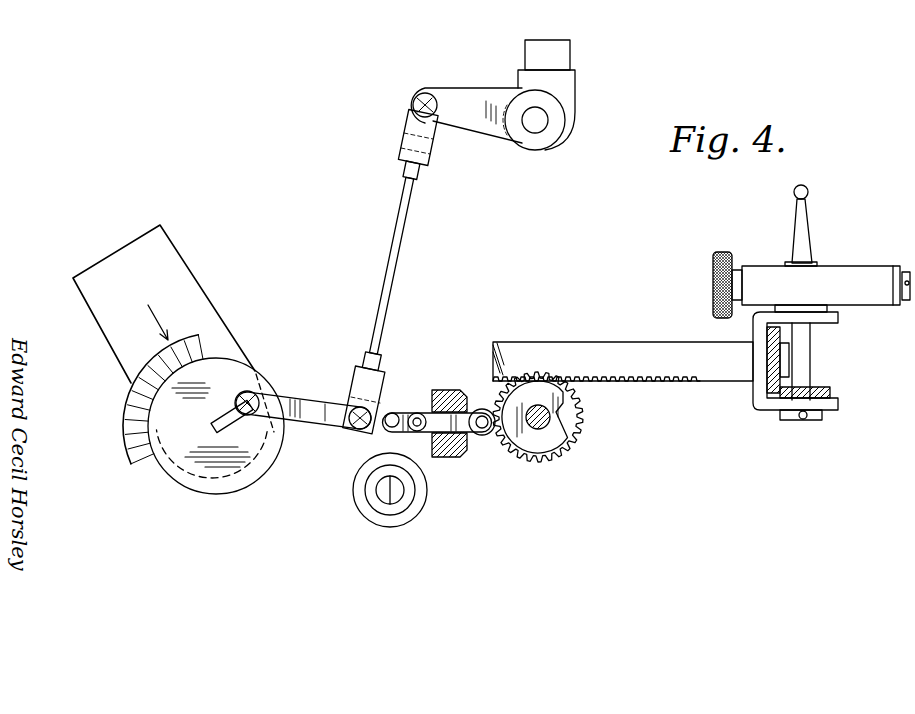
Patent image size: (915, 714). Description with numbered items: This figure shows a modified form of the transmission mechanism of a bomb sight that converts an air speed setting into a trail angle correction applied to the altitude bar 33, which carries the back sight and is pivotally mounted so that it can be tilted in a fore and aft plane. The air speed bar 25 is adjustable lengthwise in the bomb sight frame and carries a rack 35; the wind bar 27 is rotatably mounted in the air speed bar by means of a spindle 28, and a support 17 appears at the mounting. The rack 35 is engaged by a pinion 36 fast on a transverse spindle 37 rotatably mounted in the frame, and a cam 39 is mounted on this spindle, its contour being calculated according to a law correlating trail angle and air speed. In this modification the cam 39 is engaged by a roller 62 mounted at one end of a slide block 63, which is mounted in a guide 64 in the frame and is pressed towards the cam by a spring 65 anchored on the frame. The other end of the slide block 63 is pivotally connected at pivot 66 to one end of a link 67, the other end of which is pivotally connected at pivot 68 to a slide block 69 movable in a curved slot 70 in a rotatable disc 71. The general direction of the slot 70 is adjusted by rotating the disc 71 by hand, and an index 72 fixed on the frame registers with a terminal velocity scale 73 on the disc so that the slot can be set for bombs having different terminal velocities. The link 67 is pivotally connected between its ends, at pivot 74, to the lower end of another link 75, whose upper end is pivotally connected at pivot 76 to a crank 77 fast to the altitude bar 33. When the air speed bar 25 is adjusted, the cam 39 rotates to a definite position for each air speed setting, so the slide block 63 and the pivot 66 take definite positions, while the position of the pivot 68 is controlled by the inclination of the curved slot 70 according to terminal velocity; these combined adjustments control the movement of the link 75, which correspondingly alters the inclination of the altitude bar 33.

The bracket foot 17 is at (760, 409).
The air speed bar 25 is at (717, 382).
The wind bar 27 is at (847, 266).
The spindle 28 is at (812, 352).
The altitude bar 33 is at (571, 57).
The rack 35 is at (656, 383).
The pinion 36 is at (565, 422).
The transverse spindle 37 is at (578, 436).
The cam 39 is at (565, 390).
The roller 62 is at (494, 445).
The slide block 63 is at (449, 387).
The guide 64 is at (450, 455).
The spring 65 is at (428, 497).
The pivot 66 is at (417, 410).
The link 67 is at (316, 428).
The pivot 68 is at (258, 393).
The slide block 69 is at (256, 436).
The slot 70 is at (231, 426).
The rotatable disc 71 is at (207, 492).
The index 72 is at (158, 325).
The terminal velocity scale 73 is at (141, 465).
The pivot 74 is at (352, 431).
The link 75 is at (401, 218).
The pivot 76 is at (412, 100).
The crank 77 is at (461, 87).